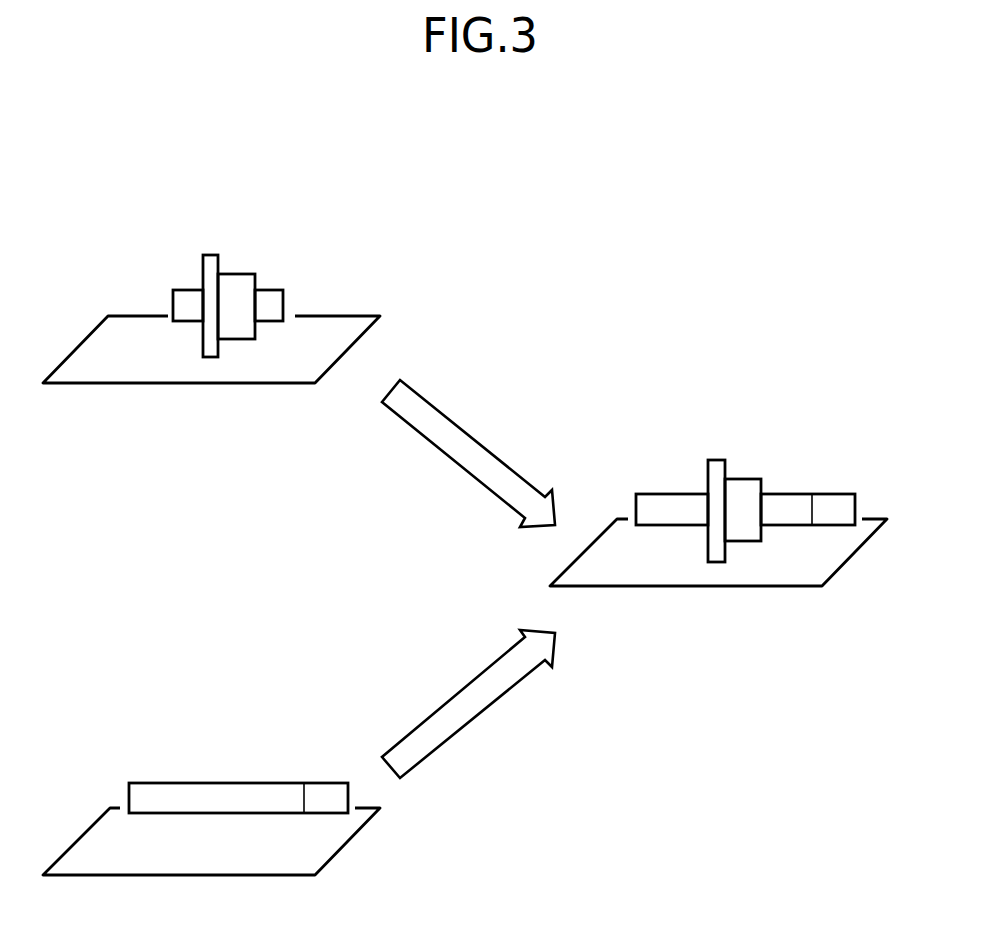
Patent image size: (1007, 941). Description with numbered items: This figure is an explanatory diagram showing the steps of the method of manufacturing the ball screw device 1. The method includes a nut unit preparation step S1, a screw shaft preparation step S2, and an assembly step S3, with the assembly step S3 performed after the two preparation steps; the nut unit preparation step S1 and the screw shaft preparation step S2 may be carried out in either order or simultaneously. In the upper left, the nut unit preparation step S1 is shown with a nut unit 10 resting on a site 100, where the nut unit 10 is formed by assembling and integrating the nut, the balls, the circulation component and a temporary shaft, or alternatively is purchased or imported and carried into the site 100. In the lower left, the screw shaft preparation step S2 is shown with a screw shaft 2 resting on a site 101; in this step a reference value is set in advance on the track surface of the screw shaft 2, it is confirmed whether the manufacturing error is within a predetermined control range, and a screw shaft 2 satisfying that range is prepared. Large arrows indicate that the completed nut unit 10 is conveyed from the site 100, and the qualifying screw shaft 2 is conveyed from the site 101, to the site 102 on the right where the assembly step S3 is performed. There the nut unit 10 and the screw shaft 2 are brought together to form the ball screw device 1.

The ball screw device 1 is at (708, 433).
The screw shaft 2 is at (203, 723).
The nut unit 10 is at (203, 230).
The site 100 is at (332, 340).
The site 101 is at (293, 850).
The site 102 is at (800, 562).
The nut unit preparation step S1 is at (254, 253).
The screw shaft preparation step S2 is at (235, 744).
The assembly step S3 is at (741, 456).